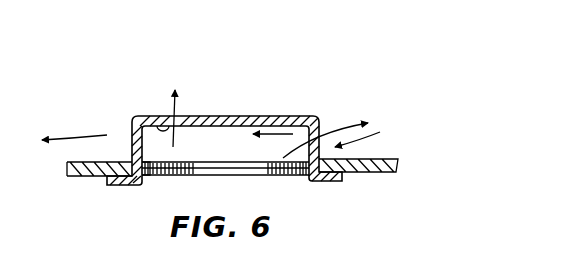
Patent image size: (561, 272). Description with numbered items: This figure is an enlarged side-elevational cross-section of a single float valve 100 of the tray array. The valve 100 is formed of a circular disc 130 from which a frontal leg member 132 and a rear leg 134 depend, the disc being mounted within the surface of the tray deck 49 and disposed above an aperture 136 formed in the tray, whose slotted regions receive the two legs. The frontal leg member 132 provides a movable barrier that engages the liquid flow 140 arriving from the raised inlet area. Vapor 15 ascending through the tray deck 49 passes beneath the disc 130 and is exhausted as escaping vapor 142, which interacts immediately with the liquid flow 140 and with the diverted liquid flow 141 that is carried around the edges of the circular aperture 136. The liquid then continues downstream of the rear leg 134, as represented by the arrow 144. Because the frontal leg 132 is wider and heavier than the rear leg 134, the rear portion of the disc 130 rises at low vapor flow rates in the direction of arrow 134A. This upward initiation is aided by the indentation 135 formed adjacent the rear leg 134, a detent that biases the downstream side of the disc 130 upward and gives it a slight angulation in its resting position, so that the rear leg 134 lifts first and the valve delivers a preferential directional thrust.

The float valve 100 is at (117, 106).
The circular disc 130 is at (263, 115).
The frontal leg member 132 is at (315, 116).
The rear leg 134 is at (132, 143).
The direction of upward movement 134A is at (180, 107).
The indentation (detent) 135 is at (163, 125).
The aperture 136 is at (173, 175).
The vapor 15 is at (229, 135).
The tray (tray deck) 49 is at (370, 168).
The liquid flow 140 is at (372, 134).
The diverted liquid flow 141 is at (262, 115).
The escaping vapor 142 is at (348, 122).
The downstream liquid flow 144 is at (78, 137).